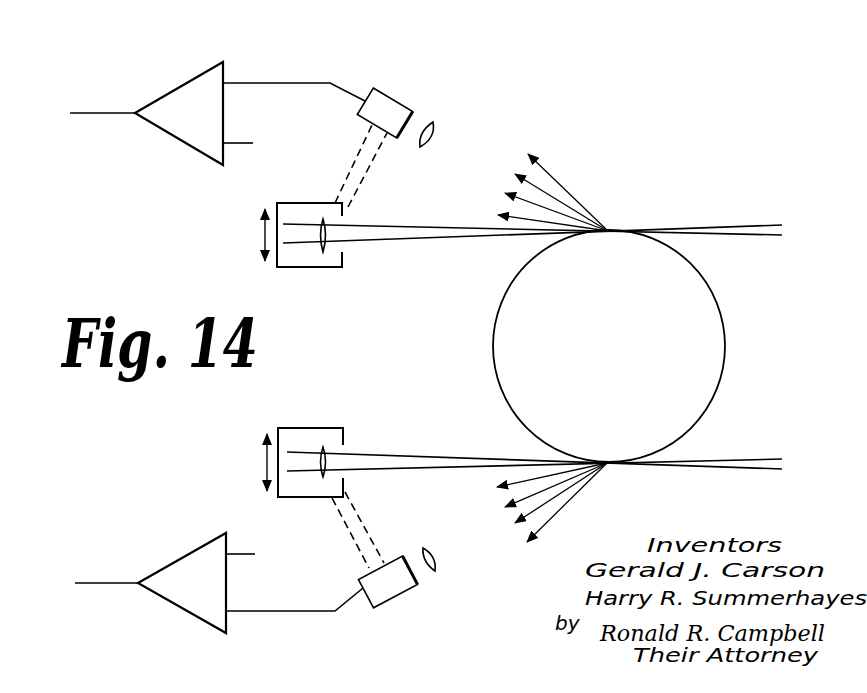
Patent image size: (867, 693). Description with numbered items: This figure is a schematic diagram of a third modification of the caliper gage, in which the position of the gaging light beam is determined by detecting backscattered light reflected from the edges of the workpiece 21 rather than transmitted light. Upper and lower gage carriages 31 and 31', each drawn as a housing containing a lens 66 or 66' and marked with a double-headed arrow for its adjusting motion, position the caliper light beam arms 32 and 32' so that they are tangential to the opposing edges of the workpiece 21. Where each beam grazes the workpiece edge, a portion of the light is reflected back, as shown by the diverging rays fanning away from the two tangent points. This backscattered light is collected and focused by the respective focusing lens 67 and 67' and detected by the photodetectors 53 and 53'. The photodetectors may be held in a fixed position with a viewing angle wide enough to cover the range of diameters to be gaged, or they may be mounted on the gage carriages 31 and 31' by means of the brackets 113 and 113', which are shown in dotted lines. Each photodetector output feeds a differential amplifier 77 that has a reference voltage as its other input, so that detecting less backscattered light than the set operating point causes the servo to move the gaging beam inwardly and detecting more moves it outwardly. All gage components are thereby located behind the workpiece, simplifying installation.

The differential amplifier 77 is at (197, 77).
The photodetector 53 is at (397, 97).
The focusing lens 67 is at (455, 122).
The bracket 113 is at (378, 166).
The gage carriage 31 is at (303, 217).
The lens 66 is at (309, 260).
The caliper light beam arm 32 is at (532, 254).
The workpiece 21 is at (494, 365).
The gage carriage 31' is at (305, 480).
The lens, second channel 66' is at (315, 437).
The caliper light beam arm 32' is at (534, 448).
The bracket 113' is at (380, 530).
The focusing lens 67' is at (456, 566).
The photodetector 53' is at (388, 600).